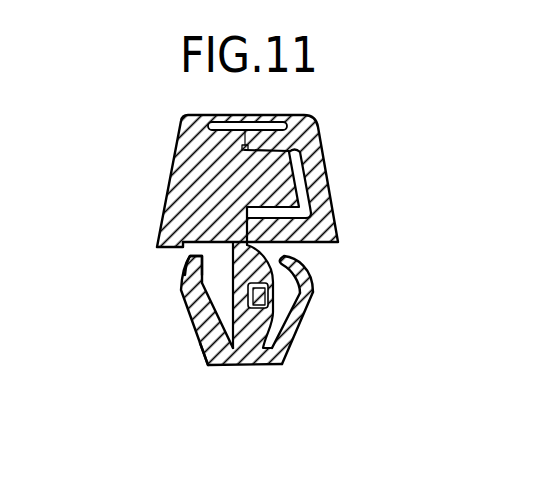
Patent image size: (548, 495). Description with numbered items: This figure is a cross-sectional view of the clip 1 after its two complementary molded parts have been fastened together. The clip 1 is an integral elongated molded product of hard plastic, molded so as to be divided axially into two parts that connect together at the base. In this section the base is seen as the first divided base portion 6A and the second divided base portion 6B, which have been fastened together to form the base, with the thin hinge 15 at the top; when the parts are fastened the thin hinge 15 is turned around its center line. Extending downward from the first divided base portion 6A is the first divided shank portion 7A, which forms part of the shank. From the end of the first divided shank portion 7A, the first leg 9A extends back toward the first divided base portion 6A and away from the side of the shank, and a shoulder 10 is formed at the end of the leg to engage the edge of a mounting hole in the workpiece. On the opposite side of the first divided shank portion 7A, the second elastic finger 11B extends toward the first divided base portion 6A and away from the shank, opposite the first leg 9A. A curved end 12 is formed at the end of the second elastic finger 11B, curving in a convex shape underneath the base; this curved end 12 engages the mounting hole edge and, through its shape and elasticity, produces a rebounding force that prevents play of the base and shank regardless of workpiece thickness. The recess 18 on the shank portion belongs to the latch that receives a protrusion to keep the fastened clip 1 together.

The clip 1 is at (431, 137).
The first divided base portion 6A is at (172, 170).
The second divided base portion 6B is at (331, 205).
The first divided shank portion 7A is at (193, 325).
The first leg 9A is at (196, 345).
The shoulder 10 is at (181, 290).
The second elastic finger 11B is at (293, 338).
The curved end 12 is at (284, 259).
The thin hinge 15 is at (231, 116).
The recess 18 is at (256, 310).